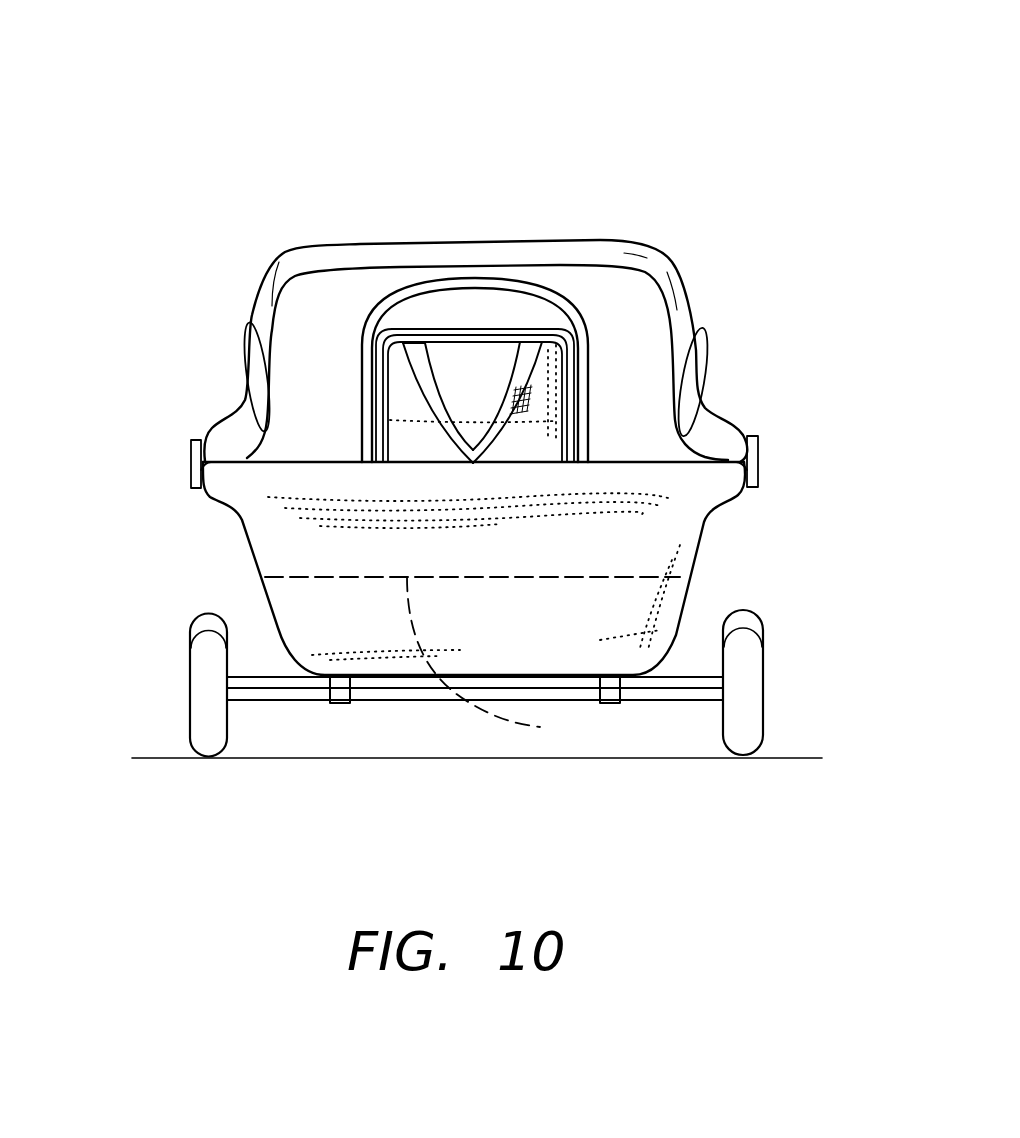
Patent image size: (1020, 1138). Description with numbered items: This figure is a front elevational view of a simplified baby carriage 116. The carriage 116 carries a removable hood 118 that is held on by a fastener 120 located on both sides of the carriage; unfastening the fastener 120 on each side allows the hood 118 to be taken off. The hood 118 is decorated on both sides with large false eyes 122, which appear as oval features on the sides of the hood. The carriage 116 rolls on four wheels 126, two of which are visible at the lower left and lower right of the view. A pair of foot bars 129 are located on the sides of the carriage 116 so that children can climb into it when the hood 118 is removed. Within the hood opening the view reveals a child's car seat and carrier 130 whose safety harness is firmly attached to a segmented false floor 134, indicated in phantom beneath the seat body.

The baby carriage 116 is at (318, 128).
The hood 118 is at (275, 250).
The fastener 120 is at (192, 468).
The false eyes 122 is at (262, 373).
The wheels 126 is at (200, 730).
The foot bars 129 is at (680, 673).
The child's car seat and carrier 130 is at (630, 284).
The segmented false floor 134 is at (413, 373).